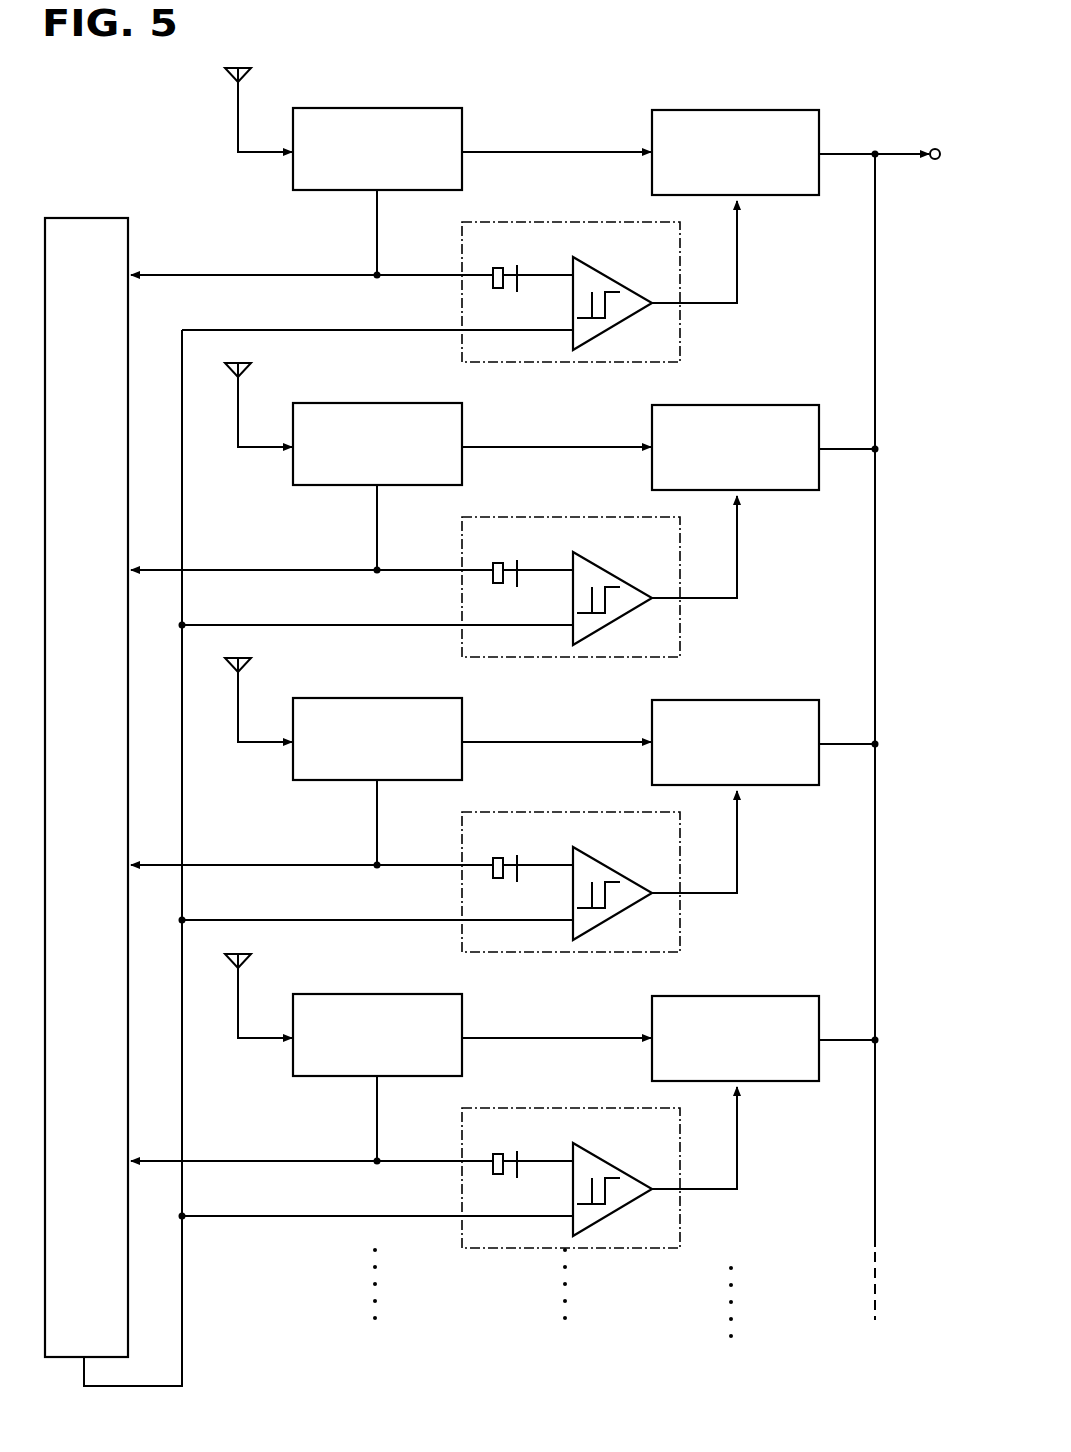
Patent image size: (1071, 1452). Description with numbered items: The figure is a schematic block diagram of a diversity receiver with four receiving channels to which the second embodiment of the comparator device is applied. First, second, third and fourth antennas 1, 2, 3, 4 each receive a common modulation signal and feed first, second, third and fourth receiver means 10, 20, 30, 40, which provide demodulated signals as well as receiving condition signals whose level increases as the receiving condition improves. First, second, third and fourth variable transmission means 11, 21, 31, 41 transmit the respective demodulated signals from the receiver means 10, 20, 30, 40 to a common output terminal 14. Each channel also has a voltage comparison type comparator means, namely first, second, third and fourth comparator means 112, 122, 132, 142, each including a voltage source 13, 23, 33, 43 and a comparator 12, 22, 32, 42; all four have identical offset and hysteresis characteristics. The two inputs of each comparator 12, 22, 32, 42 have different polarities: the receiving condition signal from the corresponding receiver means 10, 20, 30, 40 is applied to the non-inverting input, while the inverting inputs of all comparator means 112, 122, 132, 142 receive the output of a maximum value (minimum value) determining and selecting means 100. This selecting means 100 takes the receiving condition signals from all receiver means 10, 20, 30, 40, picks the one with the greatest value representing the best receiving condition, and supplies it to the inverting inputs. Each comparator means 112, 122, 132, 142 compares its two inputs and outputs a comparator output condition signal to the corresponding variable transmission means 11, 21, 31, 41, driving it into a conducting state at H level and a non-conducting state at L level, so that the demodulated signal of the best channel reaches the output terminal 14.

The first antenna 1 is at (228, 70).
The second antenna 2 is at (228, 365).
The third antenna 3 is at (228, 661).
The fourth antenna 4 is at (228, 957).
The first receiver means 10 is at (386, 108).
The second receiver means 20 is at (374, 403).
The third receiver means 30 is at (374, 698).
The fourth receiver means 40 is at (374, 994).
The first variable transmission means 11 is at (748, 78).
The second variable transmission means 21 is at (750, 405).
The third variable transmission means 31 is at (750, 700).
The fourth variable transmission means 41 is at (750, 996).
The first comparator 12 is at (613, 281).
The second comparator 22 is at (613, 576).
The third comparator 32 is at (613, 871).
The fourth comparator 42 is at (613, 1168).
The voltage source 13 is at (506, 266).
The voltage source 23 is at (508, 561).
The voltage source 33 is at (508, 856).
The voltage source 43 is at (508, 1152).
The first comparator means 112 is at (602, 222).
The second comparator means 122 is at (600, 517).
The third comparator means 132 is at (600, 812).
The fourth comparator means 142 is at (598, 1108).
The common output terminal 14 is at (932, 148).
The maximum value (minimum value) determining and selecting means 100 is at (92, 218).